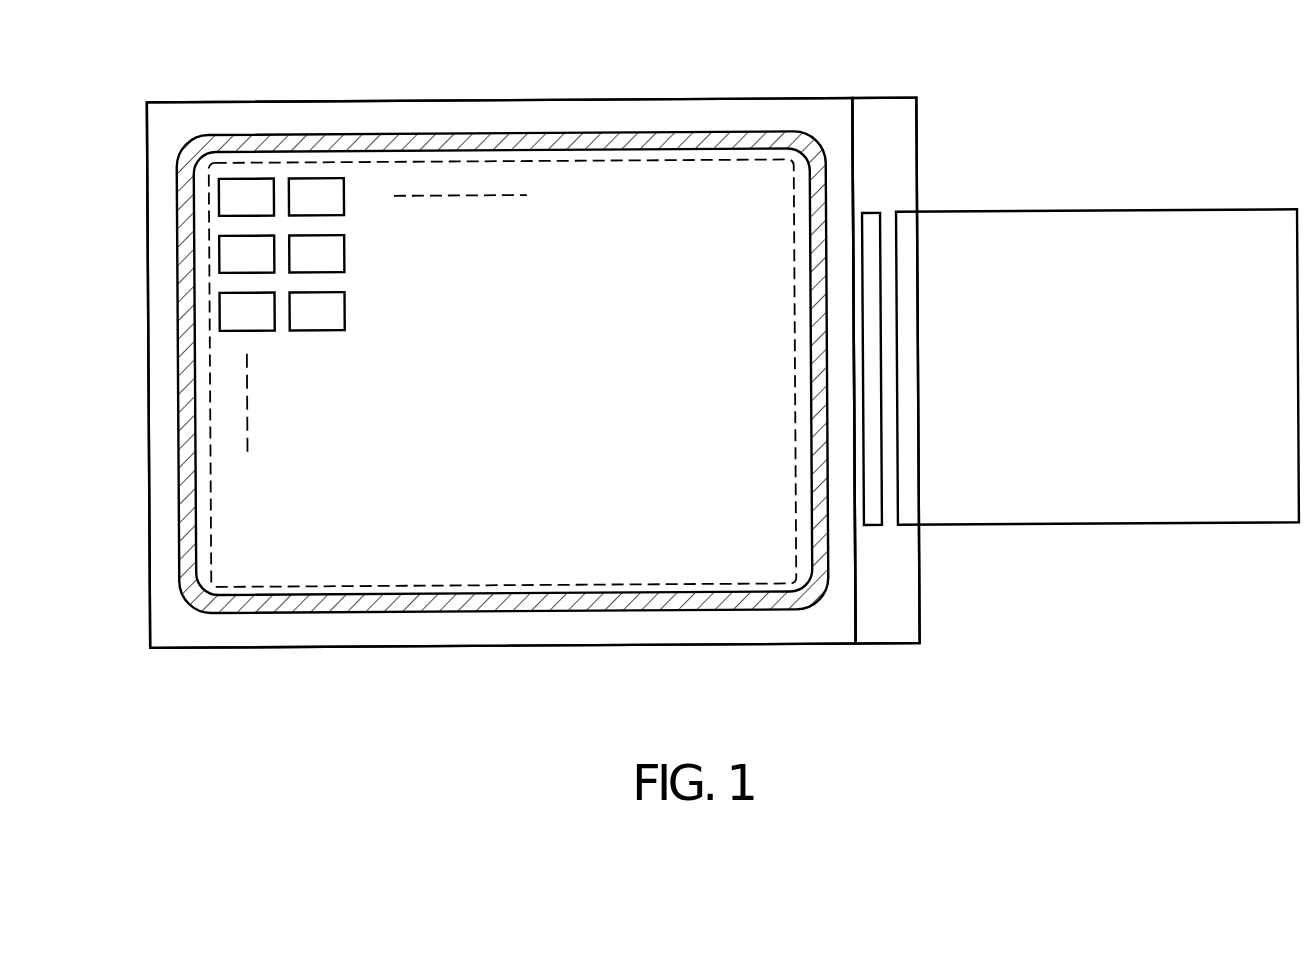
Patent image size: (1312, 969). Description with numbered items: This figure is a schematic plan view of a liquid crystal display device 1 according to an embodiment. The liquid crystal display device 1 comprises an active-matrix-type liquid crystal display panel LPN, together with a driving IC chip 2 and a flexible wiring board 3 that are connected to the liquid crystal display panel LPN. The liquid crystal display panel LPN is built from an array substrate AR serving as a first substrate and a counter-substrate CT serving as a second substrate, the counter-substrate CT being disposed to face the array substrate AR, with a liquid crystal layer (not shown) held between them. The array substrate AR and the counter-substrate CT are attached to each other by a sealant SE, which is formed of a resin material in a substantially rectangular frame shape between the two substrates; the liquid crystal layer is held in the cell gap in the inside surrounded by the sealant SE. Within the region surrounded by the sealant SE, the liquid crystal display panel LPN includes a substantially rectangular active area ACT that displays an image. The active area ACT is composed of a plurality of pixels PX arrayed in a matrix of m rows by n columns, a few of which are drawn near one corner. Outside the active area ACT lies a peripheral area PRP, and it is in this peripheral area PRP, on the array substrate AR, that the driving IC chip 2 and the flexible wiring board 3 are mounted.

The liquid crystal display device 1 is at (536, 388).
The driving IC chip 2 is at (876, 214).
The flexible wiring board 3 is at (1113, 222).
The pixel PX is at (247, 178).
The sealant SE is at (594, 127).
The peripheral area PRP is at (162, 445).
The active area ACT is at (587, 598).
The counter-substrate CT is at (793, 633).
The liquid crystal display panel LPN is at (891, 657).
The array substrate AR is at (908, 604).